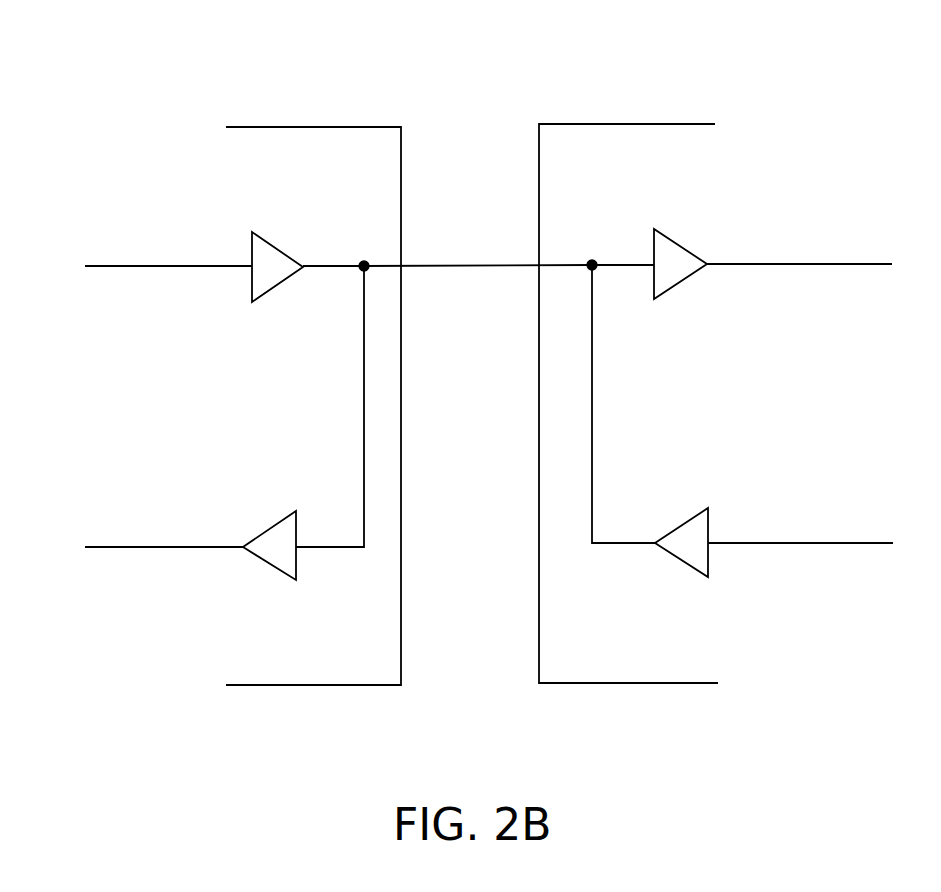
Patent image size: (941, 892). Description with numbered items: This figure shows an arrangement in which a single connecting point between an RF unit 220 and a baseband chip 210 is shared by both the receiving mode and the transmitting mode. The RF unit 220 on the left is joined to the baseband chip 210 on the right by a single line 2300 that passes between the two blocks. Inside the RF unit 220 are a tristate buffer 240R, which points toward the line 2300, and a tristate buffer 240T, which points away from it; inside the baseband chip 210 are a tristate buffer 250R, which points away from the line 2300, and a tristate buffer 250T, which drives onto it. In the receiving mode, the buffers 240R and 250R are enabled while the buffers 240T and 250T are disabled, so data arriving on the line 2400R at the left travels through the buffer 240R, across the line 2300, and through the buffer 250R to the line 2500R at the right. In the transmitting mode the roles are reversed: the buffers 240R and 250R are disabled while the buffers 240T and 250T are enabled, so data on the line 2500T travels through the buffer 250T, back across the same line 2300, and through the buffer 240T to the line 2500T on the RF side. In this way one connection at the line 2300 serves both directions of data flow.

The RF unit 220 is at (312, 127).
The baseband chip 210 is at (610, 124).
The tristate buffer 240R is at (282, 247).
The tristate buffer 240T is at (279, 572).
The tristate buffer 250R is at (682, 242).
The tristate buffer 250T is at (690, 567).
The line 2400R is at (168, 252).
The line 2500R is at (799, 249).
The line 2500T is at (489, 531).
The line 2300 is at (478, 254).